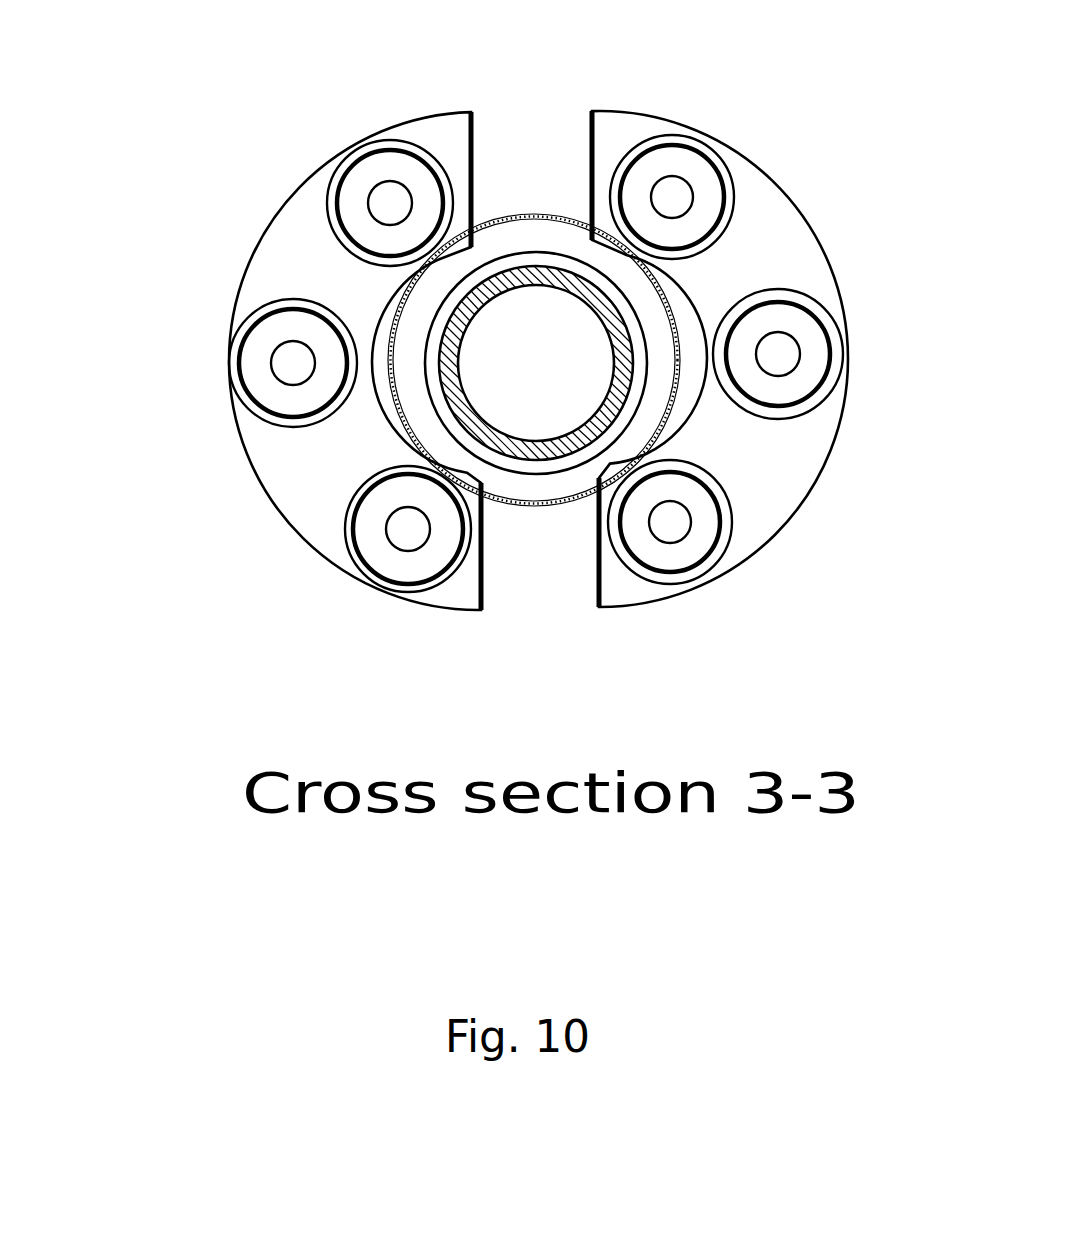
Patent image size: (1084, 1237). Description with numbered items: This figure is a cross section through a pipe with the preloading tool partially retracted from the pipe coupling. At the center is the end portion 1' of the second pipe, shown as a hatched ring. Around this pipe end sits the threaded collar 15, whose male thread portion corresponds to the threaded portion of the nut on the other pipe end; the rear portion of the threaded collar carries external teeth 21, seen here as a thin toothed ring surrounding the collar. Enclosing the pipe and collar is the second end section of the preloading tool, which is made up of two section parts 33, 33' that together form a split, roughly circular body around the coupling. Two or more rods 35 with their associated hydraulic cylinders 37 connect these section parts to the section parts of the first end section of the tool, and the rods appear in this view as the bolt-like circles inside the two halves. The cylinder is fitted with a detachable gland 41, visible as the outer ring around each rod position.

The threaded collar 15 is at (536, 242).
The external teeth 21 is at (402, 295).
The section part 33 is at (293, 361).
The section part 33' is at (772, 359).
The rod 35 is at (393, 516).
The hydraulic cylinder 37 is at (650, 558).
The detachable gland 41 is at (357, 525).
The end portion of pipe 1' is at (536, 505).